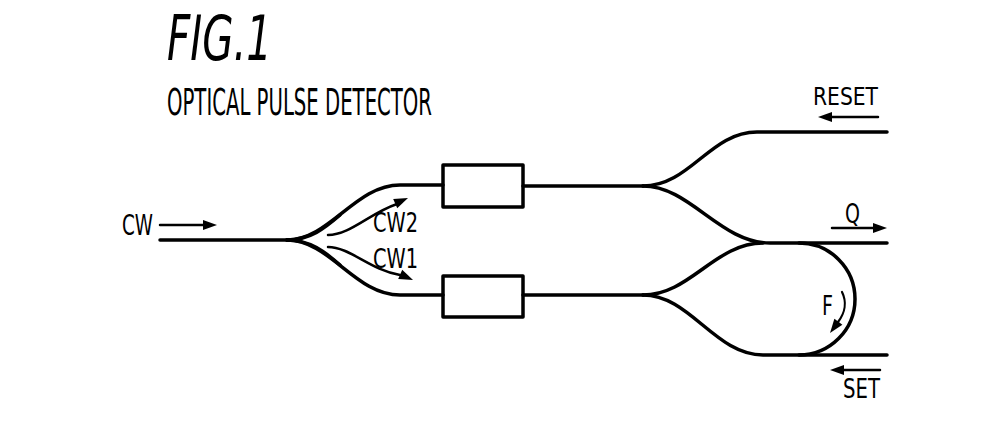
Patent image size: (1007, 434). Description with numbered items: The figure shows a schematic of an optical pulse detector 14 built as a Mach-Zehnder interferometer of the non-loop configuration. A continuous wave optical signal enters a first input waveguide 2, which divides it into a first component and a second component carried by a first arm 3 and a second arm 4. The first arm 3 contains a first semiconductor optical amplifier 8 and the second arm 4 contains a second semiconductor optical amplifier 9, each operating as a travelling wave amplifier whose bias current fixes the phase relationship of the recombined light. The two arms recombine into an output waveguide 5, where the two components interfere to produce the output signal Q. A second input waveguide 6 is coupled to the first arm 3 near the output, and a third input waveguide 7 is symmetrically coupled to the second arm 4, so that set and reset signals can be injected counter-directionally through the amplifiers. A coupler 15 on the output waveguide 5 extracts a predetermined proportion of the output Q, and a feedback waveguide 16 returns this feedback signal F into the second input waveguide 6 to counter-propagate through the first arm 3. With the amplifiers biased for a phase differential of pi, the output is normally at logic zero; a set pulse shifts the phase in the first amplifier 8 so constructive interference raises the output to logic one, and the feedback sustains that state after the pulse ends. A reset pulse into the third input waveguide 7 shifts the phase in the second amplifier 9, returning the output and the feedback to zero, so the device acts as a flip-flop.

The first input waveguide 2 is at (247, 238).
The first arm 3 is at (363, 282).
The second arm 4 is at (363, 193).
The output waveguide 5 is at (783, 245).
The second input waveguide 6 is at (720, 342).
The third input waveguide 7 is at (708, 147).
The first semiconductor optical amplifier 8 is at (478, 318).
The second semiconductor optical amplifier 9 is at (478, 165).
The optical pulse detector 14 is at (523, 130).
The coupler 15 is at (790, 224).
The feedback waveguide 16 is at (857, 308).